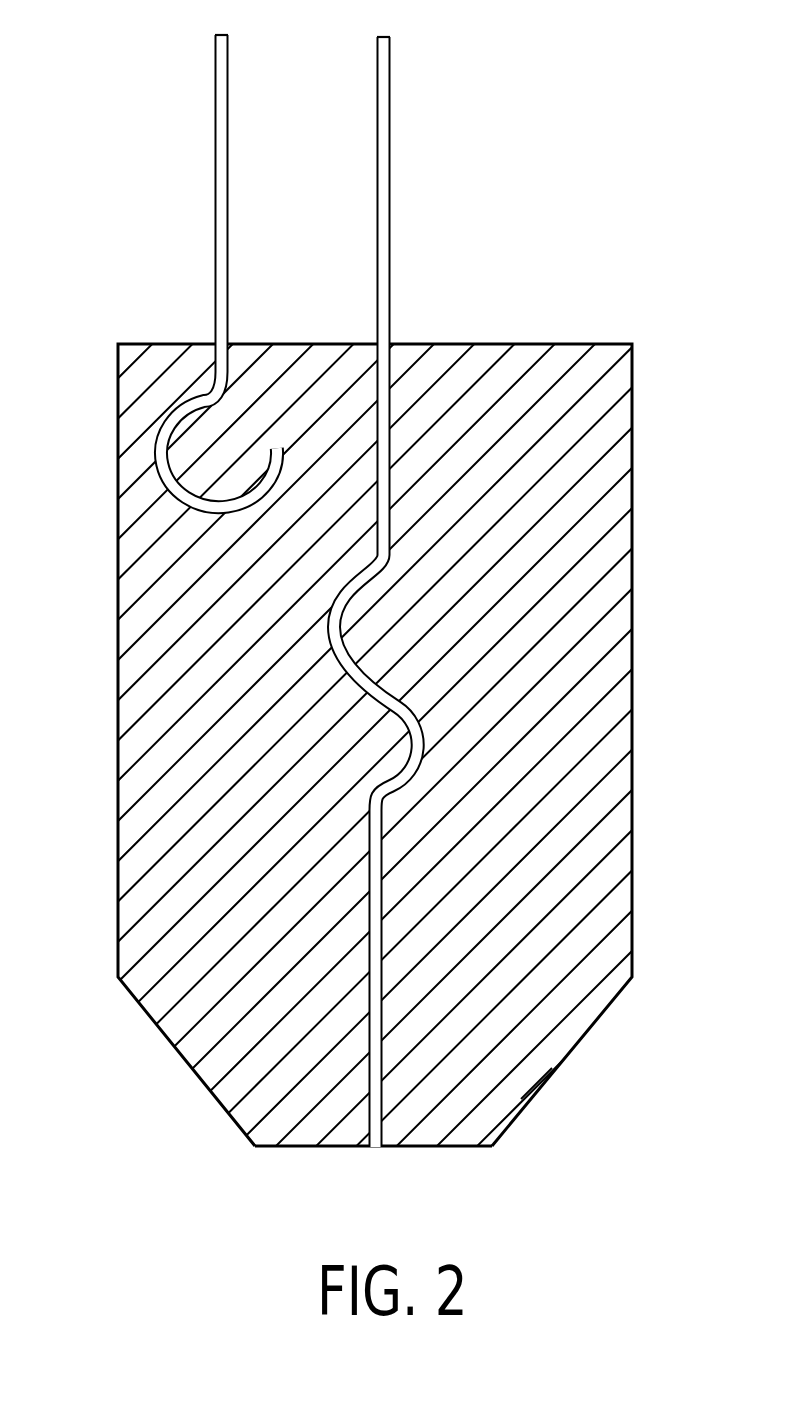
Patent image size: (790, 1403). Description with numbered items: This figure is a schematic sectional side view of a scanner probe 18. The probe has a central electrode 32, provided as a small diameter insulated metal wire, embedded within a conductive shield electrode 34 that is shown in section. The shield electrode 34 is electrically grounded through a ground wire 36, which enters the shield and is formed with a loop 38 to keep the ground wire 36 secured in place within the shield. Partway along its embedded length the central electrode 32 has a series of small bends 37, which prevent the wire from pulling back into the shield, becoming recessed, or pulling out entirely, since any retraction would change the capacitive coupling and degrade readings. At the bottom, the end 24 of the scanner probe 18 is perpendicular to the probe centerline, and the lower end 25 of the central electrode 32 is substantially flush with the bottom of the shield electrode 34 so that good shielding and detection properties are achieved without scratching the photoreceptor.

The scanner probe 18 is at (395, 625).
The end of scanner probe 24 is at (311, 1165).
The lower end of central electrode 25 is at (373, 1147).
The central electrode 32 is at (515, 592).
The shield electrode 34 is at (118, 682).
The ground wire 36 is at (172, 271).
The small bends 37 is at (339, 614).
The loop 38 is at (154, 455).